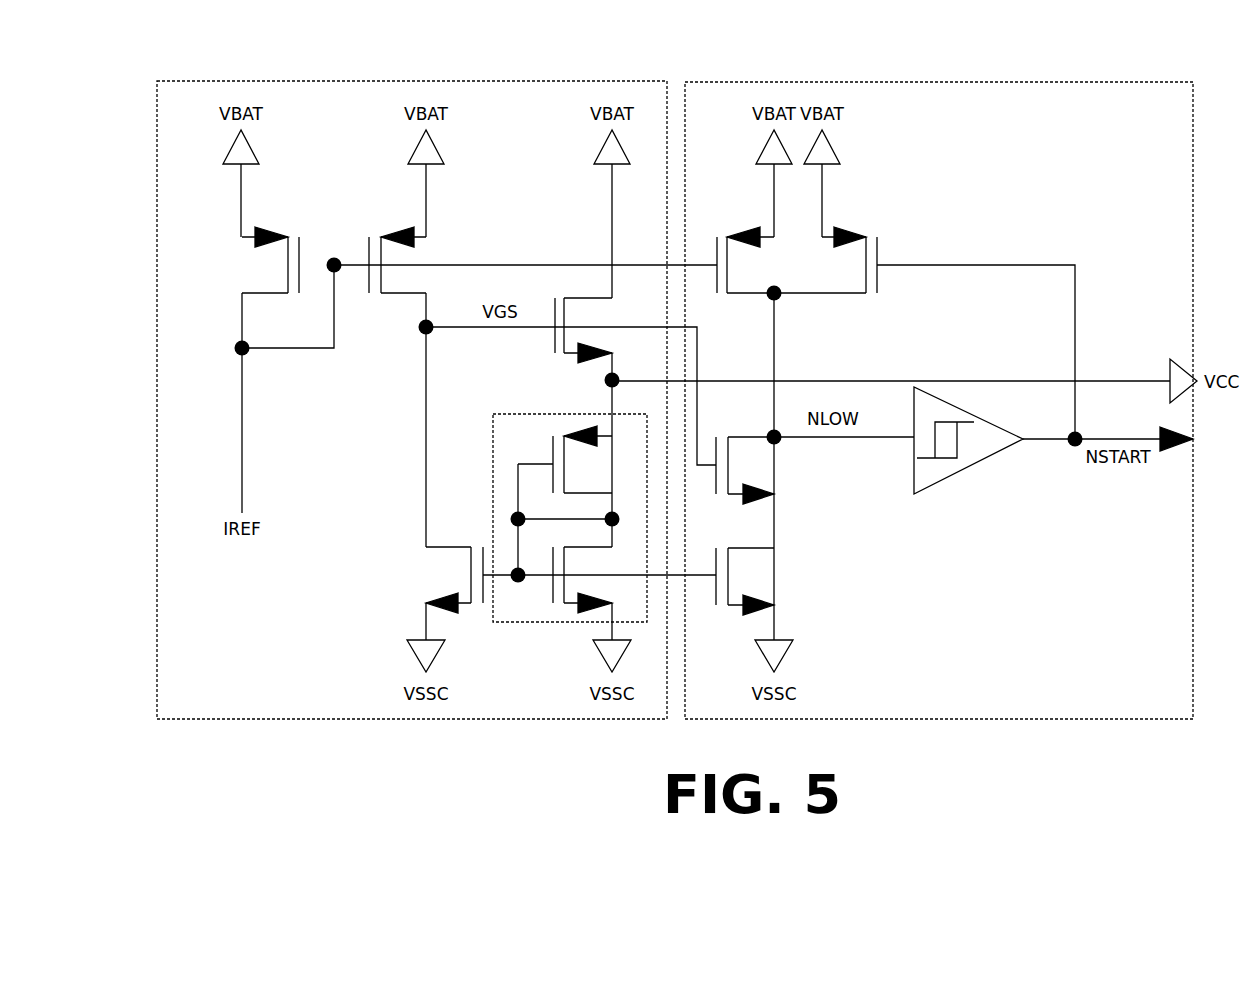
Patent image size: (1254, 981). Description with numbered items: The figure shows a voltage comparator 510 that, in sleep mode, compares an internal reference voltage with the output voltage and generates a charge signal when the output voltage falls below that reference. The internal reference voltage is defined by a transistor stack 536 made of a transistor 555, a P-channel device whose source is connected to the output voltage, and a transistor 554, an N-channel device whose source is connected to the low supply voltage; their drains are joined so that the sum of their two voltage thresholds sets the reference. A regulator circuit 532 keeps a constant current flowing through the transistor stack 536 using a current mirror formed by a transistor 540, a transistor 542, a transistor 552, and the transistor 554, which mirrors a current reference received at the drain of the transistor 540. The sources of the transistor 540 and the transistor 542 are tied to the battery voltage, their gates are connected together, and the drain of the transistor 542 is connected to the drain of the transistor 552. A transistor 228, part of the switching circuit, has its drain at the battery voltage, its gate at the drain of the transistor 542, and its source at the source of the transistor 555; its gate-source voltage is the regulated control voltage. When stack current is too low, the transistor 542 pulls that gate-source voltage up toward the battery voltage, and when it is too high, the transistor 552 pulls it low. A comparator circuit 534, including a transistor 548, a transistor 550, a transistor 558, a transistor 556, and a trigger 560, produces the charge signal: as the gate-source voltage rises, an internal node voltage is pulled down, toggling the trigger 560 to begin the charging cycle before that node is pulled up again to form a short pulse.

The voltage comparator 510 is at (152, 18).
The regulator circuit 532 is at (258, 81).
The comparator circuit 534 is at (1062, 82).
The transistor stack 536 is at (493, 438).
The transistor 540 is at (272, 232).
The transistor 542 is at (392, 234).
The transistor 548 is at (745, 233).
The transistor 550 is at (855, 236).
The transistor 552 is at (445, 597).
The transistor 554 is at (586, 609).
The transistor 555 is at (587, 446).
The transistor 556 is at (768, 604).
The transistor 558 is at (758, 500).
The trigger 560 is at (958, 471).
The transistor 228 is at (578, 357).